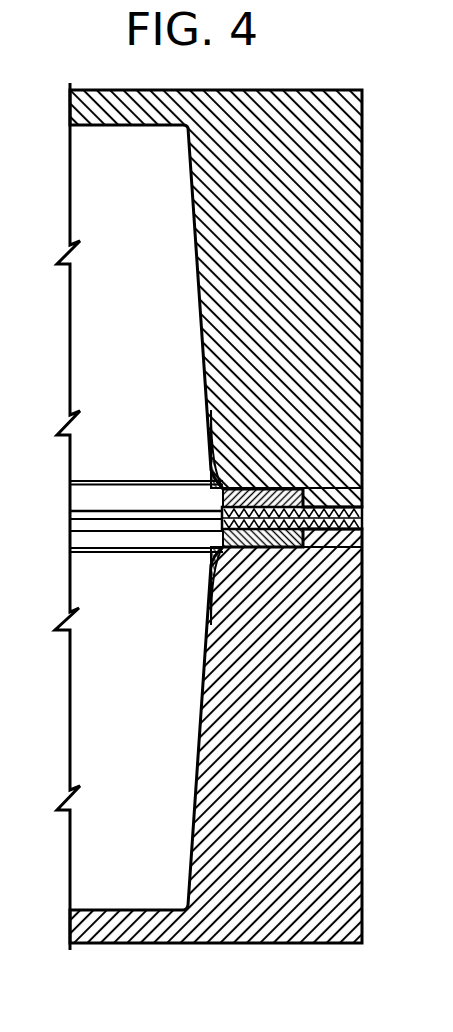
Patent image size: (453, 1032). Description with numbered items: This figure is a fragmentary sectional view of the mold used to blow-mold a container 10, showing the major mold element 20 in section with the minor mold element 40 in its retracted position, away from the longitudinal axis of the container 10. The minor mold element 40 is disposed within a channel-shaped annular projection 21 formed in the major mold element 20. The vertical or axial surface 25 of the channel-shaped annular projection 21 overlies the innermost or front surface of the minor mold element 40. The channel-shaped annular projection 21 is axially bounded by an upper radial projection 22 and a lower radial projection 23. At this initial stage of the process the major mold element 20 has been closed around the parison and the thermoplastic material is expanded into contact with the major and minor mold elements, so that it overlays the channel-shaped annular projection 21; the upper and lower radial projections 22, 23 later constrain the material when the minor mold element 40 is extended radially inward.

The container 10 is at (96, 215).
The major mold element 20 is at (308, 90).
The channel-shaped annular projection 21 is at (210, 498).
The upper radial projection 22 is at (215, 504).
The lower radial projection 23 is at (210, 485).
The axial surface 25 is at (205, 487).
The minor mold element 40 is at (363, 498).